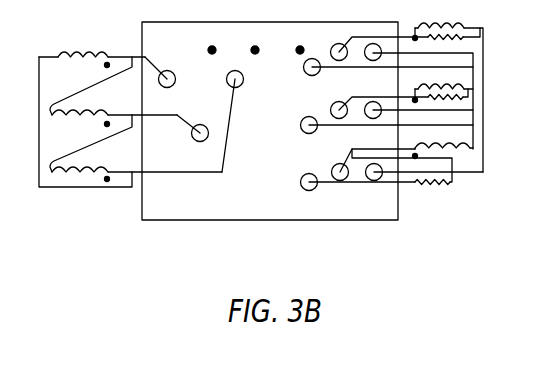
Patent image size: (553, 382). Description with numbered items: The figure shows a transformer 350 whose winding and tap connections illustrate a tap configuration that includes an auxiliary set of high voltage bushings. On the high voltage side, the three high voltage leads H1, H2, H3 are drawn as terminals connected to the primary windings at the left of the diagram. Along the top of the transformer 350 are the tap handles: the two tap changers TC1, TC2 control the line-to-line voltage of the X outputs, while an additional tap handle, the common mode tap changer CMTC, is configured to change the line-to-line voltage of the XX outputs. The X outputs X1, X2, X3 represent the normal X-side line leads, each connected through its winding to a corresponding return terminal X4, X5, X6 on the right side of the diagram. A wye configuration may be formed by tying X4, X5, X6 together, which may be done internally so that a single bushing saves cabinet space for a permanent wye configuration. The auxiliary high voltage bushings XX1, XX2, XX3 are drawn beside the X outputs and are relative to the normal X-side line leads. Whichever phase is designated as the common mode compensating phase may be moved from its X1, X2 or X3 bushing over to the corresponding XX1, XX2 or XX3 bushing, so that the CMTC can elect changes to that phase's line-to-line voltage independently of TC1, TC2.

The transformer 350 is at (261, 153).
The high voltage lead H1 is at (170, 72).
The high voltage lead H2 is at (191, 136).
The high voltage lead H3 is at (246, 122).
The tap changer TC1 is at (205, 41).
The tap changer TC2 is at (252, 41).
The common mode tap changer CMTC is at (298, 41).
The HV bushing XX1 is at (375, 72).
The HV bushing XX2 is at (371, 125).
The HV bushing XX3 is at (342, 187).
The X output bushing X1 is at (379, 61).
The X output bushing X2 is at (378, 120).
The X output bushing X3 is at (390, 175).
The X output bushing X4 is at (425, 183).
The X output bushing X5 is at (419, 97).
The X output bushing X6 is at (419, 123).